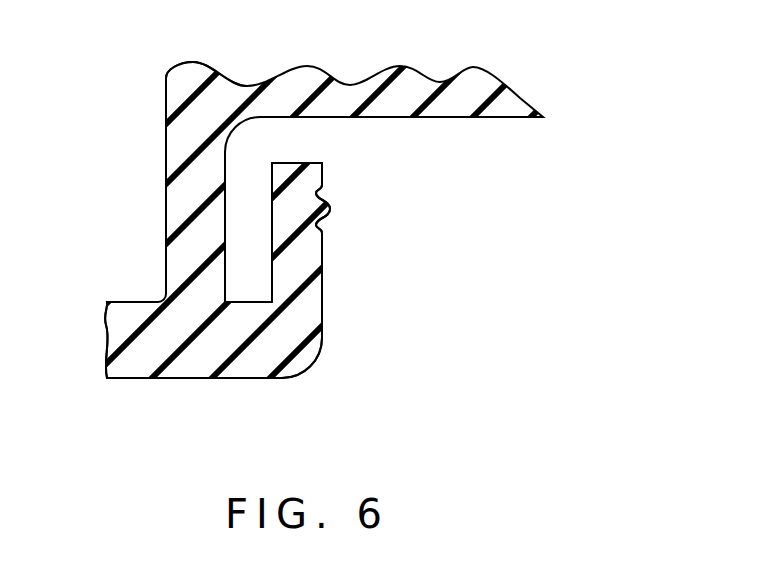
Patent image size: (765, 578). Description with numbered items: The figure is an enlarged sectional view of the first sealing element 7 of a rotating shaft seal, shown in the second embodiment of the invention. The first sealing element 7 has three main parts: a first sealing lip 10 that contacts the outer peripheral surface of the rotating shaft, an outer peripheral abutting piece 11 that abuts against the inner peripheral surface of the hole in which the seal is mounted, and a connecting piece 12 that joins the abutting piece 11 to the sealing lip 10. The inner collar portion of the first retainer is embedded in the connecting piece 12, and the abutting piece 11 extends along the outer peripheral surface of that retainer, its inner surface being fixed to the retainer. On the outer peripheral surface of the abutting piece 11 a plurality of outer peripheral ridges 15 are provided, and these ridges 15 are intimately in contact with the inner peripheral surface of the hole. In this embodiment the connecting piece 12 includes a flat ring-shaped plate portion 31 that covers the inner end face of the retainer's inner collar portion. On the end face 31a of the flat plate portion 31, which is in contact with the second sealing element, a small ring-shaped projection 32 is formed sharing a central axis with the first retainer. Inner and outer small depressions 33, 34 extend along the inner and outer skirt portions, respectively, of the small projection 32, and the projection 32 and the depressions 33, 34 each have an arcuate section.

The first sealing element 7 is at (158, 127).
The outer peripheral ridges 15 is at (194, 62).
The outer peripheral abutting piece 11 is at (353, 84).
The outer small depression 34 is at (325, 192).
The small ring-shaped projection 32 is at (331, 209).
The inner small depression 33 is at (325, 228).
The end face of flat plate portion 31a is at (325, 280).
The flat ring-shaped plate portion 31 is at (325, 315).
The first sealing lip 10 is at (131, 380).
The connecting piece 12 is at (245, 380).